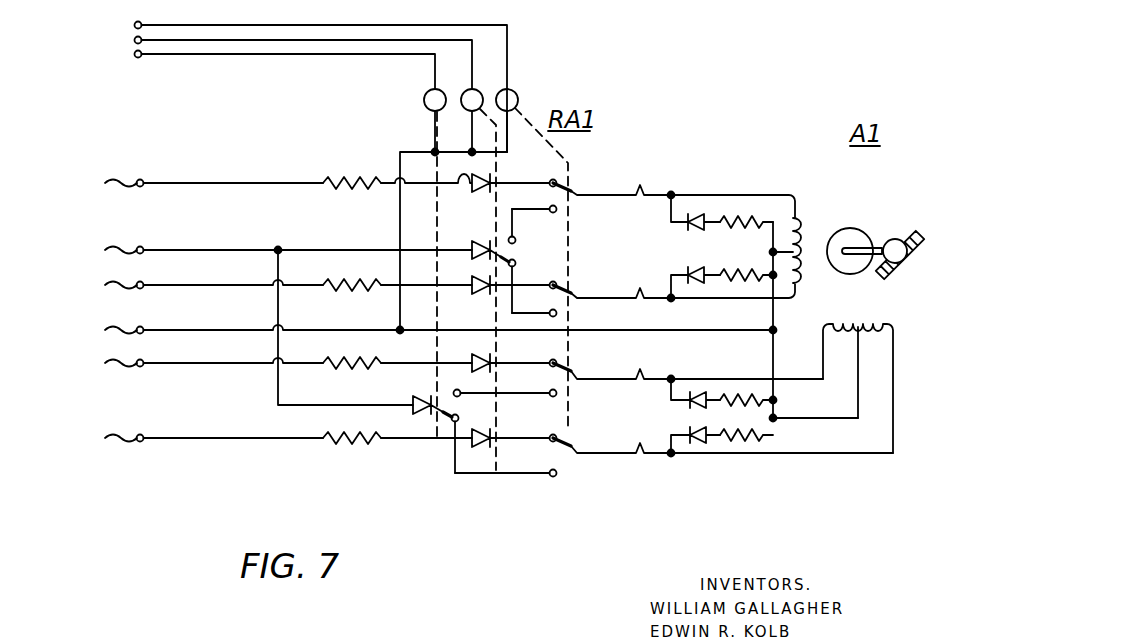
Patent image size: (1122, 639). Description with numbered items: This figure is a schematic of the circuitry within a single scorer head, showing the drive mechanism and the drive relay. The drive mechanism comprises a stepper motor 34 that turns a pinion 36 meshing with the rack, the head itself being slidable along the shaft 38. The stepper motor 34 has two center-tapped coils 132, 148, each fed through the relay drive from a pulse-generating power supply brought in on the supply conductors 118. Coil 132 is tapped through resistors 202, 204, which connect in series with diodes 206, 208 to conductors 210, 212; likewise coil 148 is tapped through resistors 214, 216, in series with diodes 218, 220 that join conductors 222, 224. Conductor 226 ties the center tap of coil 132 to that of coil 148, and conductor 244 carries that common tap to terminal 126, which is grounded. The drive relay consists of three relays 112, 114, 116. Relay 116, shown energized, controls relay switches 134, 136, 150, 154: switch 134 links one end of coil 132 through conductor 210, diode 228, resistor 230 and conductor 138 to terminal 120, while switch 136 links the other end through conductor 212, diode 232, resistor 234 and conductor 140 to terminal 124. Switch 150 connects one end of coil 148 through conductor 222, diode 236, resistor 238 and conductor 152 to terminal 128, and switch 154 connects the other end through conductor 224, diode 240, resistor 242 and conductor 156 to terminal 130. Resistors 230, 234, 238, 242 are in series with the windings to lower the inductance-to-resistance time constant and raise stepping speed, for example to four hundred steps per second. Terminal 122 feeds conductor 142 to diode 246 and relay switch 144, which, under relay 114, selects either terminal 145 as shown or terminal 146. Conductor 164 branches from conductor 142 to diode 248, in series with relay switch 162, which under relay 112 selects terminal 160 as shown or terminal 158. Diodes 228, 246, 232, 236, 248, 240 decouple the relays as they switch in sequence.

The stepper motor 34 is at (859, 228).
The pinion 36 is at (897, 238).
The shaft 38 is at (913, 268).
The relay 112 is at (423, 99).
The relay 114 is at (482, 92).
The relay 116 is at (517, 96).
The power supply conductors 118 is at (327, 68).
The terminal 120 is at (99, 184).
The terminal 122 is at (99, 250).
The terminal 124 is at (99, 287).
The terminal 126 is at (99, 332).
The terminal 128 is at (99, 364).
The terminal 130 is at (99, 439).
The coil 132 is at (810, 214).
The relay switch 134 is at (576, 191).
The relay switch 136 is at (576, 301).
The conductor 138 is at (228, 183).
The conductor 140 is at (223, 285).
The conductor 142 is at (205, 250).
The relay switch 144 is at (527, 228).
The terminal 145 is at (512, 298).
The terminal 146 is at (537, 213).
The coil 148 is at (878, 319).
The relay switch 150 is at (594, 352).
The conductor 152 is at (170, 366).
The relay switch 154 is at (574, 462).
The conductor 156 is at (222, 440).
The terminal 158 is at (544, 392).
The terminal 160 is at (468, 481).
The relay switch 162 is at (448, 424).
The conductor 164 is at (304, 404).
The resistor 202 is at (715, 221).
The resistor 204 is at (739, 275).
The diode 206 is at (680, 234).
The diode 208 is at (700, 272).
The conductor 210 is at (655, 185).
The conductor 212 is at (697, 303).
The resistor 214 is at (757, 393).
The resistor 216 is at (757, 428).
The diode 218 is at (680, 407).
The diode 220 is at (687, 430).
The conductor 222 is at (691, 372).
The conductor 224 is at (731, 458).
The conductor 226 is at (778, 312).
The diode 228 is at (465, 199).
The resistor 230 is at (362, 183).
The diode 232 is at (470, 297).
The resistor 234 is at (348, 278).
The diode 236 is at (482, 358).
The resistor 238 is at (351, 354).
The diode 240 is at (486, 433).
The resistor 242 is at (334, 432).
The conductor 244 is at (367, 308).
The diode 246 is at (468, 248).
The diode 248 is at (416, 399).